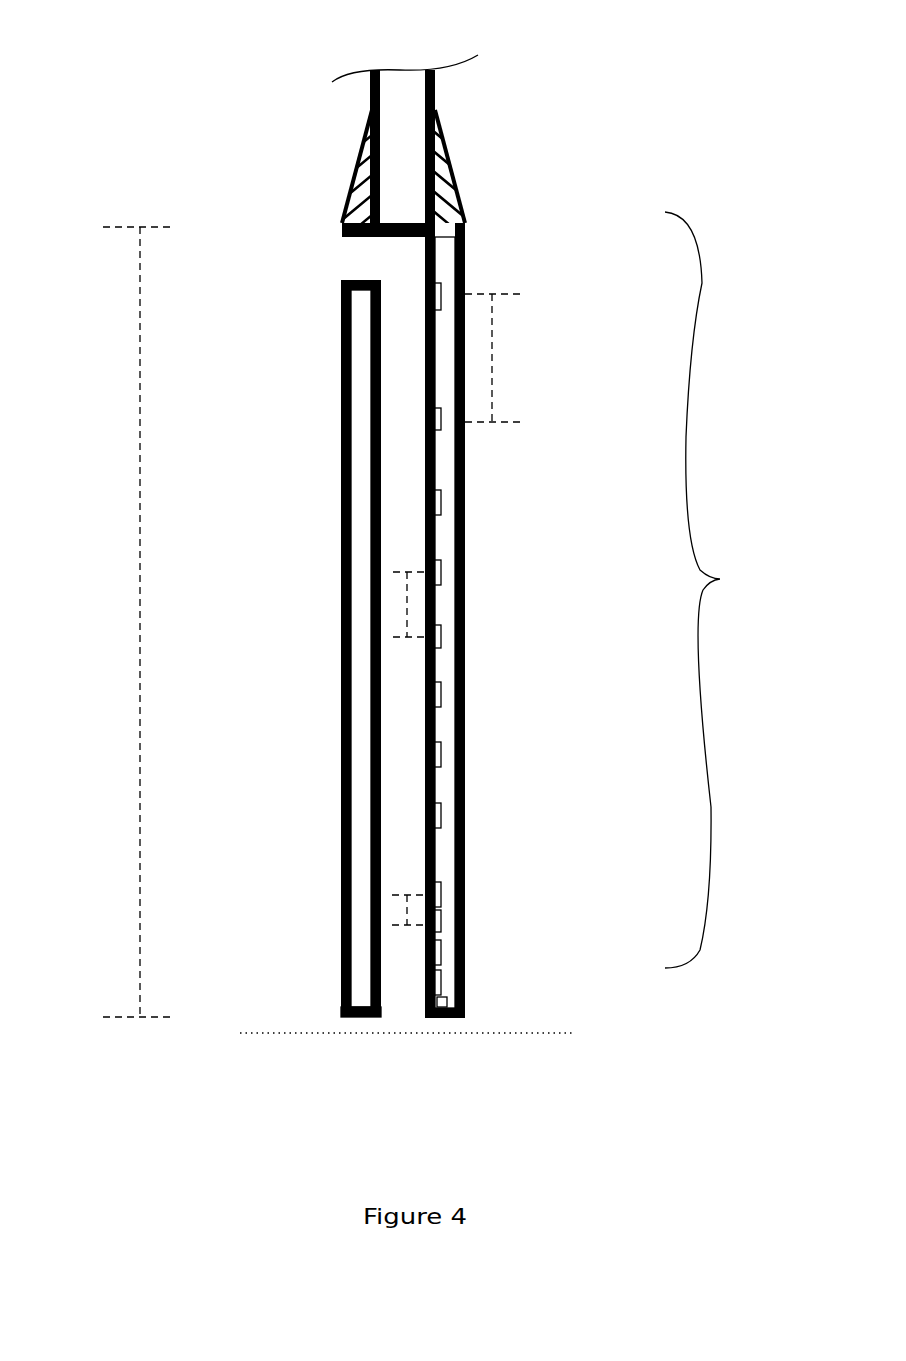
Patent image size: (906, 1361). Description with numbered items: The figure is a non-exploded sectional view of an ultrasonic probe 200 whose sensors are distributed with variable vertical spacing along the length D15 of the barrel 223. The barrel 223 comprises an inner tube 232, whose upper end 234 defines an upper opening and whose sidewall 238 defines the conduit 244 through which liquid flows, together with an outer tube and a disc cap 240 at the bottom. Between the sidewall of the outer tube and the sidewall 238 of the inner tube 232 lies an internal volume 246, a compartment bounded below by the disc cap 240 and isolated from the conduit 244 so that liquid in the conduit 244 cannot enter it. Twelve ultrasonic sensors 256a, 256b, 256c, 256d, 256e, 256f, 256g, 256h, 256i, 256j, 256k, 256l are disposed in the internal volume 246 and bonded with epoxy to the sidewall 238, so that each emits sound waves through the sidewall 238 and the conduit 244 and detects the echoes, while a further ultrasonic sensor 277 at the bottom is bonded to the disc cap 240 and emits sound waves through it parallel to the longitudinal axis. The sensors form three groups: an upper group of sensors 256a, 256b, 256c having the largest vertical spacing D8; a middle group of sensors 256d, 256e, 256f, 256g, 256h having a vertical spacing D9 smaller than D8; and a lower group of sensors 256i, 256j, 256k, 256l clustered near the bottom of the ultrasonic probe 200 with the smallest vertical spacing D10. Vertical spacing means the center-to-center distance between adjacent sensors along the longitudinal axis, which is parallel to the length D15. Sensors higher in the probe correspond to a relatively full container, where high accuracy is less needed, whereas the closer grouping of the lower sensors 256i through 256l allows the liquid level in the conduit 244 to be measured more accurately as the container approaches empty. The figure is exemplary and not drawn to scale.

The ultrasonic probe 200 is at (190, 104).
The inner tube 232 is at (430, 227).
The upper end of the inner tube 234 is at (355, 278).
The conduit 244 is at (392, 440).
The internal volume 246 is at (443, 257).
The sidewall of the inner tube 238 is at (430, 550).
The disc cap 240 is at (363, 1007).
The ultrasonic sensor 277 is at (447, 1003).
The barrel 223 is at (721, 590).
The ultrasonic sensor 256a is at (441, 296).
The ultrasonic sensor 256b is at (441, 418).
The ultrasonic sensor 256c is at (441, 492).
The ultrasonic sensor 256d is at (441, 574).
The ultrasonic sensor 256e is at (441, 636).
The ultrasonic sensor 256f is at (441, 695).
The ultrasonic sensor 256g is at (441, 755).
The ultrasonic sensor 256h is at (441, 815).
The ultrasonic sensor 256i is at (441, 890).
The ultrasonic sensor 256j is at (438, 928).
The ultrasonic sensor 256k is at (438, 957).
The ultrasonic sensor 256l is at (438, 990).
The vertical spacing of the upper group D8 is at (500, 360).
The vertical spacing of the middle group D9 is at (398, 613).
The vertical spacing of the lower group D10 is at (400, 913).
The length of the barrel D15 is at (133, 480).